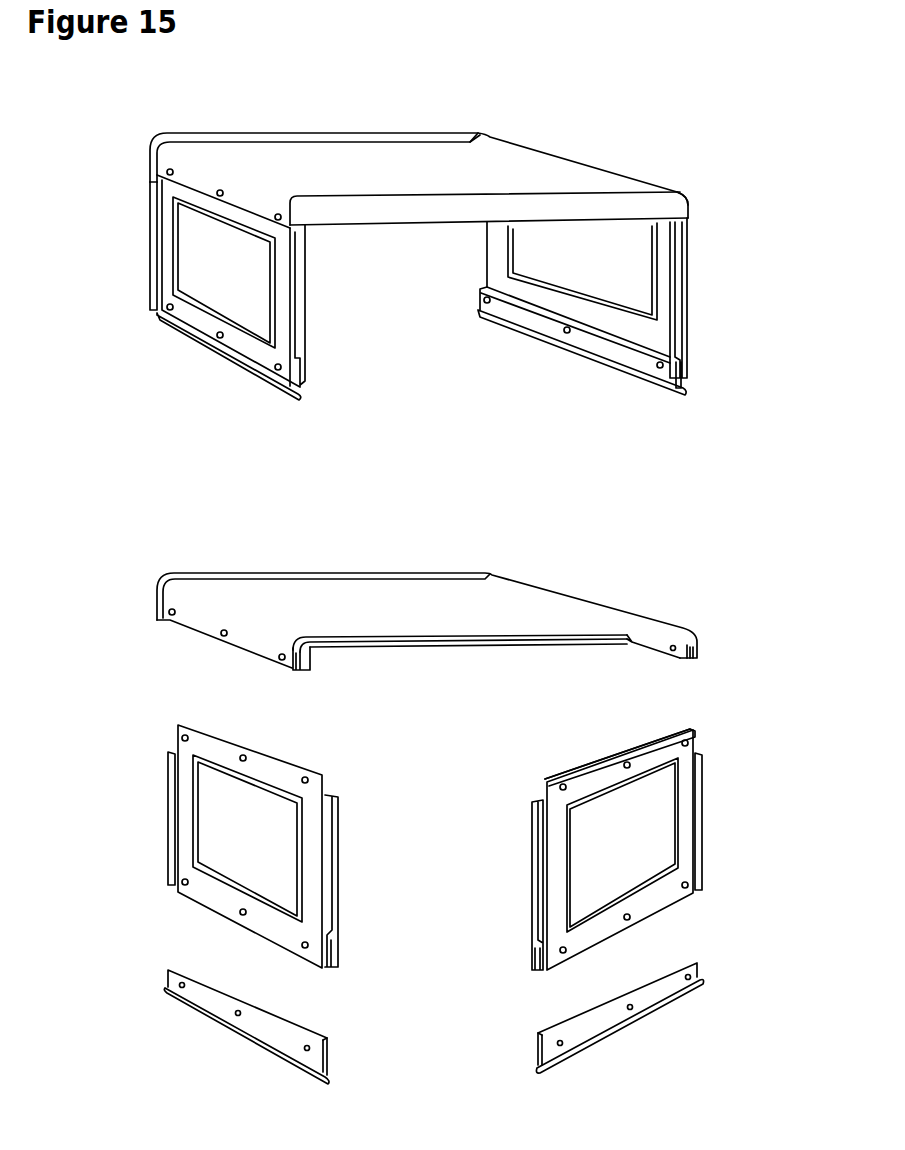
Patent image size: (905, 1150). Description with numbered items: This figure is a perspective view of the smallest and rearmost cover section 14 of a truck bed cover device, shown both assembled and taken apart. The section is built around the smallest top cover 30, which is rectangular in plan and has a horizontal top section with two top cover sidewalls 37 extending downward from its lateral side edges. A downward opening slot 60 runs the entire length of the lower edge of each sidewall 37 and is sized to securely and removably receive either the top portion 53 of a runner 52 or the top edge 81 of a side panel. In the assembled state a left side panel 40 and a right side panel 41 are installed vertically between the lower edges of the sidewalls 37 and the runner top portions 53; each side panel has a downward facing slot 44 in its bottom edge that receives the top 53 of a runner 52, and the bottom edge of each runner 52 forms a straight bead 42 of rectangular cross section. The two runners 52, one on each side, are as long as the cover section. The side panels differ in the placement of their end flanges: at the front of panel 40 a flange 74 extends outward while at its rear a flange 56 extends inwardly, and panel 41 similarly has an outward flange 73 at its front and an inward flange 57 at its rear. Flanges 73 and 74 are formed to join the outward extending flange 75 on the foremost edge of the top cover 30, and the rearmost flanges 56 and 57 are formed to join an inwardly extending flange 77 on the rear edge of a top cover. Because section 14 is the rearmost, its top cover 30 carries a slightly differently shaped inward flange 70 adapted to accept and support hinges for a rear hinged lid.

The smallest and rearmost cover section 14 is at (351, 66).
The top cover 30 is at (448, 360).
The outward extending flange 75 is at (462, 134).
The inward flange 70 is at (670, 202).
The inwardly extending flange 77 is at (337, 228).
The flange 74 is at (157, 223).
The side panel 40 is at (257, 574).
The bead 42 is at (263, 377).
The flange 57 is at (675, 262).
The side panel 41 is at (622, 594).
The downward facing slot 44 is at (675, 355).
The runner 52 is at (682, 373).
The top cover sidewall 37 is at (203, 612).
The downward opening slot 60 is at (697, 640).
The flange 56 is at (333, 878).
The top edge 81 is at (692, 735).
The flange 73 is at (695, 820).
The top portion 53 is at (330, 1034).